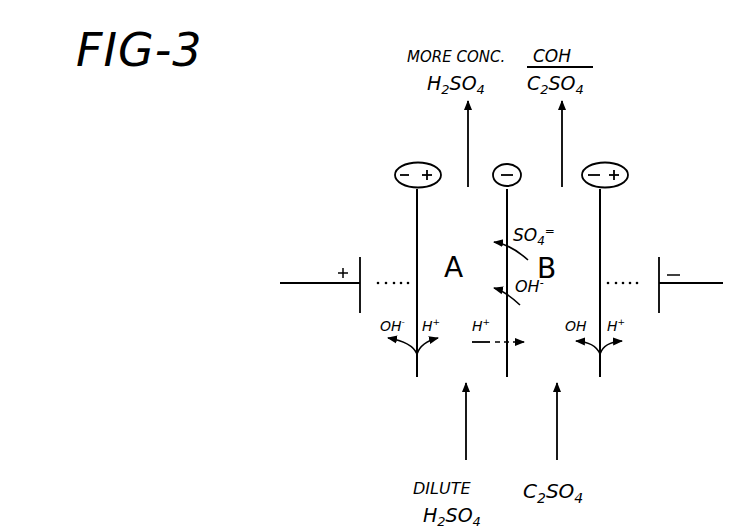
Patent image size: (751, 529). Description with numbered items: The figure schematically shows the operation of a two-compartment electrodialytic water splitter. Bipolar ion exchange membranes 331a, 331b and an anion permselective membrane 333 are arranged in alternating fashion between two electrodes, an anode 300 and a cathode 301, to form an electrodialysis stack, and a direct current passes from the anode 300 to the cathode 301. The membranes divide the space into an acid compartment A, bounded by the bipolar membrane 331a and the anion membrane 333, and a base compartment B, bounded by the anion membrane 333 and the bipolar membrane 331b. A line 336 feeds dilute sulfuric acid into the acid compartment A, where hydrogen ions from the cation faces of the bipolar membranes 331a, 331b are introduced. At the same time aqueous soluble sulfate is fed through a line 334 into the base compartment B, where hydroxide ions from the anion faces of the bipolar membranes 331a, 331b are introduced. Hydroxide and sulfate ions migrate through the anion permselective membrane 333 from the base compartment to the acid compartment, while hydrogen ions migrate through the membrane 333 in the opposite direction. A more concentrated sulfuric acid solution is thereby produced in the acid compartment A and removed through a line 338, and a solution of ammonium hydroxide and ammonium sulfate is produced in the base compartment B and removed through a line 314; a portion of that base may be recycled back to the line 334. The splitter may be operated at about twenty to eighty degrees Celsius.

The anode 300 is at (360, 296).
The cathode 301 is at (659, 300).
The line 314 is at (562, 145).
The bipolar ion exchange membrane 331a is at (417, 362).
The bipolar ion exchange membrane 331b is at (600, 372).
The anion permselective membrane 333 is at (507, 368).
The line 334 is at (587, 430).
The line 336 is at (497, 430).
The line 338 is at (468, 143).